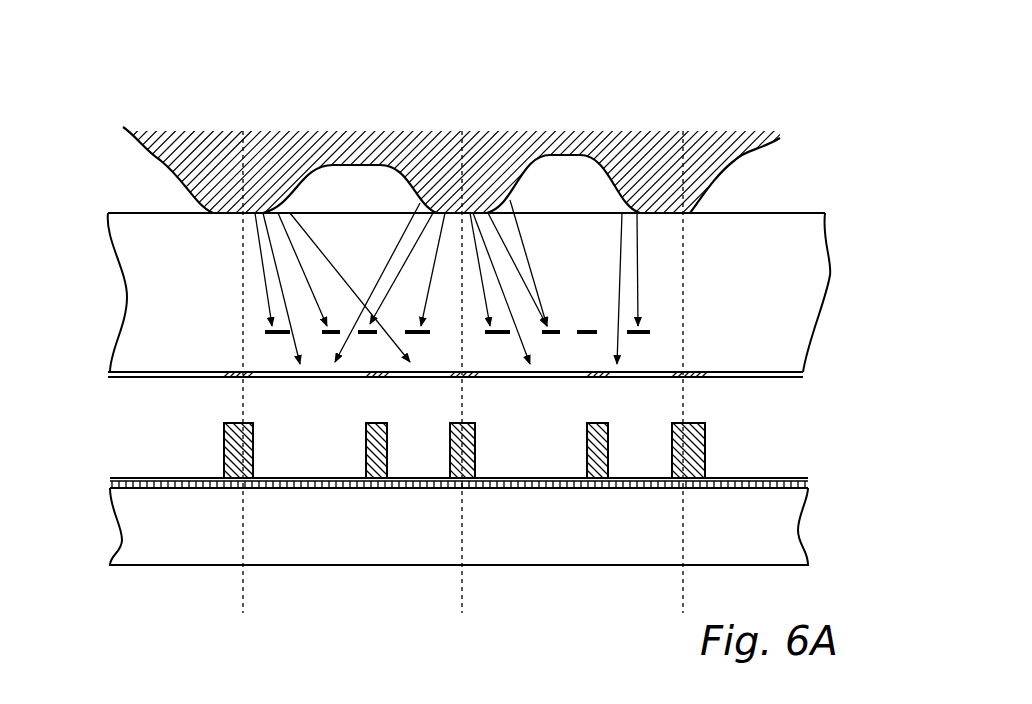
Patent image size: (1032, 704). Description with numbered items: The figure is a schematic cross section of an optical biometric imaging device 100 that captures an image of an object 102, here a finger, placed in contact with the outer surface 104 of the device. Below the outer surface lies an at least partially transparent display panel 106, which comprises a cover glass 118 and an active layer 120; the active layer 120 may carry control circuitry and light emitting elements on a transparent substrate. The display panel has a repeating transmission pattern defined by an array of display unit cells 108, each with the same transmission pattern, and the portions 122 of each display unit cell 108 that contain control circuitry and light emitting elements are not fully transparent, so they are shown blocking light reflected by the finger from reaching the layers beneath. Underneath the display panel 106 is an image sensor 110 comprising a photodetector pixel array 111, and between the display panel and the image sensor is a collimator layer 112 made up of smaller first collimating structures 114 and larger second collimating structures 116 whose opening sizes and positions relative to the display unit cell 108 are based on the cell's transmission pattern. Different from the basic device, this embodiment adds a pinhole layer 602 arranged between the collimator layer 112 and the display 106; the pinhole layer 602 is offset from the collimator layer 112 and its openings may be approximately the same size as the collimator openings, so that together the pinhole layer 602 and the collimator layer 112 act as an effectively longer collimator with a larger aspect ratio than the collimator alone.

The optical biometric imaging device 100 is at (780, 62).
The object 102 is at (270, 150).
The outer surface 104 is at (135, 210).
The display panel 106 is at (840, 213).
The display unit cell 108 is at (462, 118).
The image sensor 110 is at (840, 478).
The photodetector pixel array 111 is at (163, 488).
The collimator layer 112 is at (143, 432).
The first collimating structures 114 is at (405, 442).
The second collimating structures 116 is at (322, 422).
The cover glass 118 is at (132, 272).
The active layer 120 is at (132, 353).
The portions of the display unit cell 122 is at (272, 328).
The pinhole layer 602 is at (803, 377).